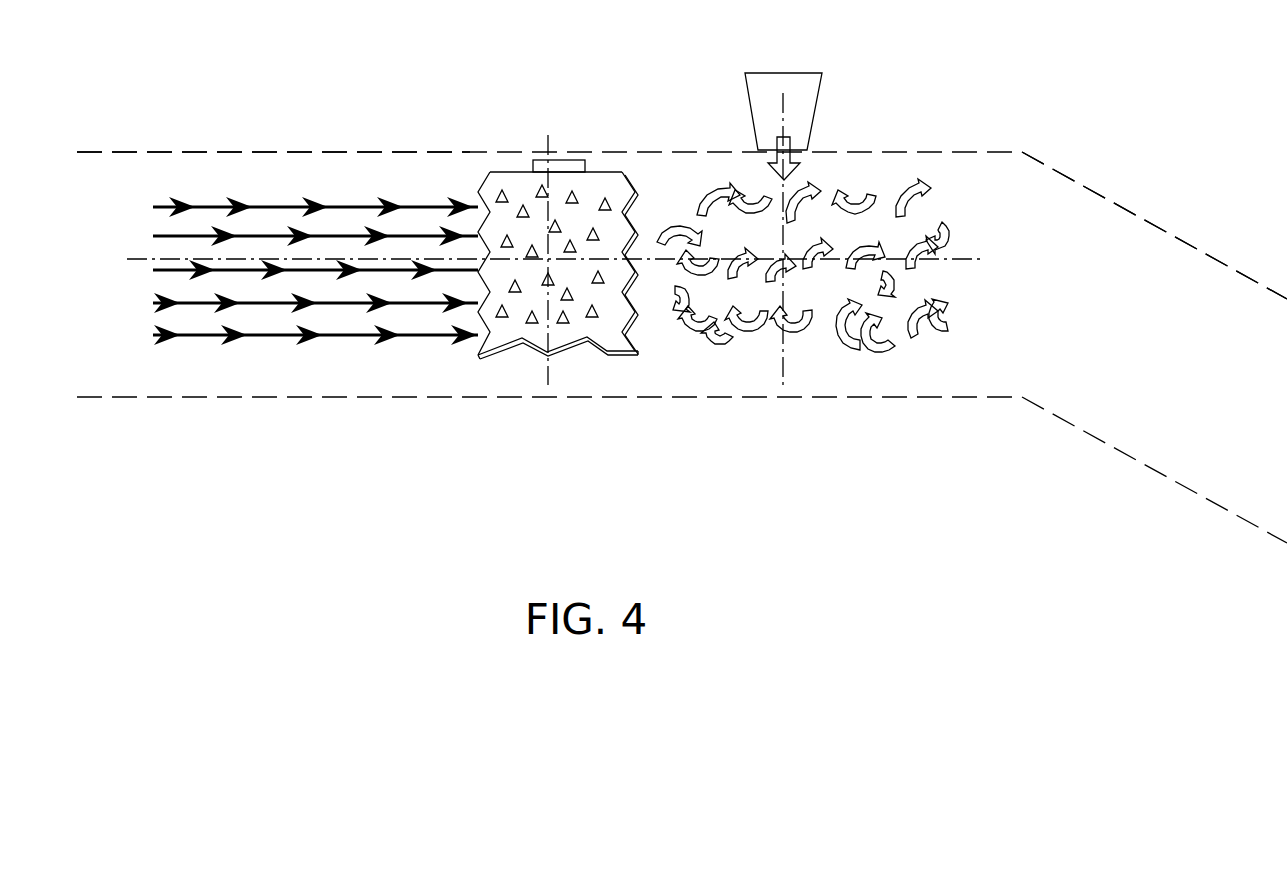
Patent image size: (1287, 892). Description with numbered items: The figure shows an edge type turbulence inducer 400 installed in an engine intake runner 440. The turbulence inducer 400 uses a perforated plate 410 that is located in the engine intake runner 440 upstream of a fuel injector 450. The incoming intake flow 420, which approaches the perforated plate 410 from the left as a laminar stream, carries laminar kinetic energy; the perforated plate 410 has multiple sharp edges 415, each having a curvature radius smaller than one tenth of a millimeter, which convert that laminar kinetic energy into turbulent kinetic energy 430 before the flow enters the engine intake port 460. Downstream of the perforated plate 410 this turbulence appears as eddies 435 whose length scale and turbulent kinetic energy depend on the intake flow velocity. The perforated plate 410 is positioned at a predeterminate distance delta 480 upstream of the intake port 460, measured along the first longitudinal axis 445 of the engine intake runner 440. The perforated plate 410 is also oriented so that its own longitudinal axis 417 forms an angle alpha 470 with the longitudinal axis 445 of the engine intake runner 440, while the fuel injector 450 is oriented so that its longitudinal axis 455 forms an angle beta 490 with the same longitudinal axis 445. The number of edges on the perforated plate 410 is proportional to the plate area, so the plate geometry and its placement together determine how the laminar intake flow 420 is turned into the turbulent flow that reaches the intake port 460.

The turbulence inducer 400 is at (338, 68).
The perforated plate 410 is at (598, 171).
The sharp edges 415 is at (498, 330).
The longitudinal axis of the perforated plate 417 is at (546, 144).
The incoming intake flow 420 is at (272, 326).
The turbulent kinetic energy 430 is at (819, 373).
The eddies 435 is at (743, 340).
The engine intake runner 440 is at (43, 283).
The longitudinal axis of the engine intake runner 445 is at (961, 243).
The fuel injector 450 is at (759, 56).
The longitudinal axis of the fuel injector 455 is at (781, 393).
The engine intake port 460 is at (1106, 344).
The angle alpha 470 is at (580, 305).
The predeterminate distance delta 480 is at (649, 230).
The angle beta 490 is at (800, 300).